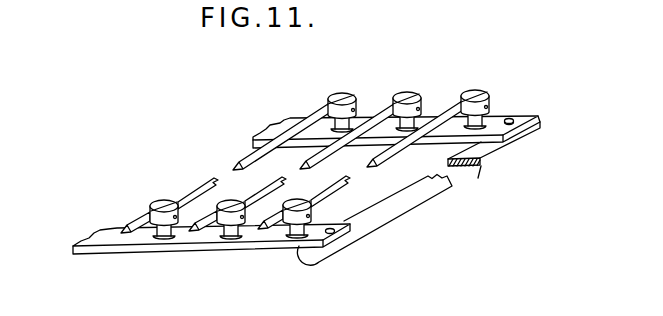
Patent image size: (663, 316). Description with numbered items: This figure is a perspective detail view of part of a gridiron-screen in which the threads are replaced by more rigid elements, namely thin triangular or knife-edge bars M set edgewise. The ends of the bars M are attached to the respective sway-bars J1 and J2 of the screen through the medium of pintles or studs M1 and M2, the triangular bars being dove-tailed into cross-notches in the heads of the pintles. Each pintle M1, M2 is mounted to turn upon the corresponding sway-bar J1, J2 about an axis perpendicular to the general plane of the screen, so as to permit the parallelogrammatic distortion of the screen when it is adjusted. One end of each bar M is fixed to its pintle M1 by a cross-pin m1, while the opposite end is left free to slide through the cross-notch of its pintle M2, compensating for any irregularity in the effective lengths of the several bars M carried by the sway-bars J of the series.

The sway-bar J is at (453, 187).
The sway-bar J1 is at (508, 113).
The sway-bar J2 is at (88, 254).
The triangular or knife-edge bar M is at (233, 168).
The pintle or stud M1 is at (337, 93).
The pintle or stud M2 is at (160, 205).
The cross-pin m1 is at (366, 103).